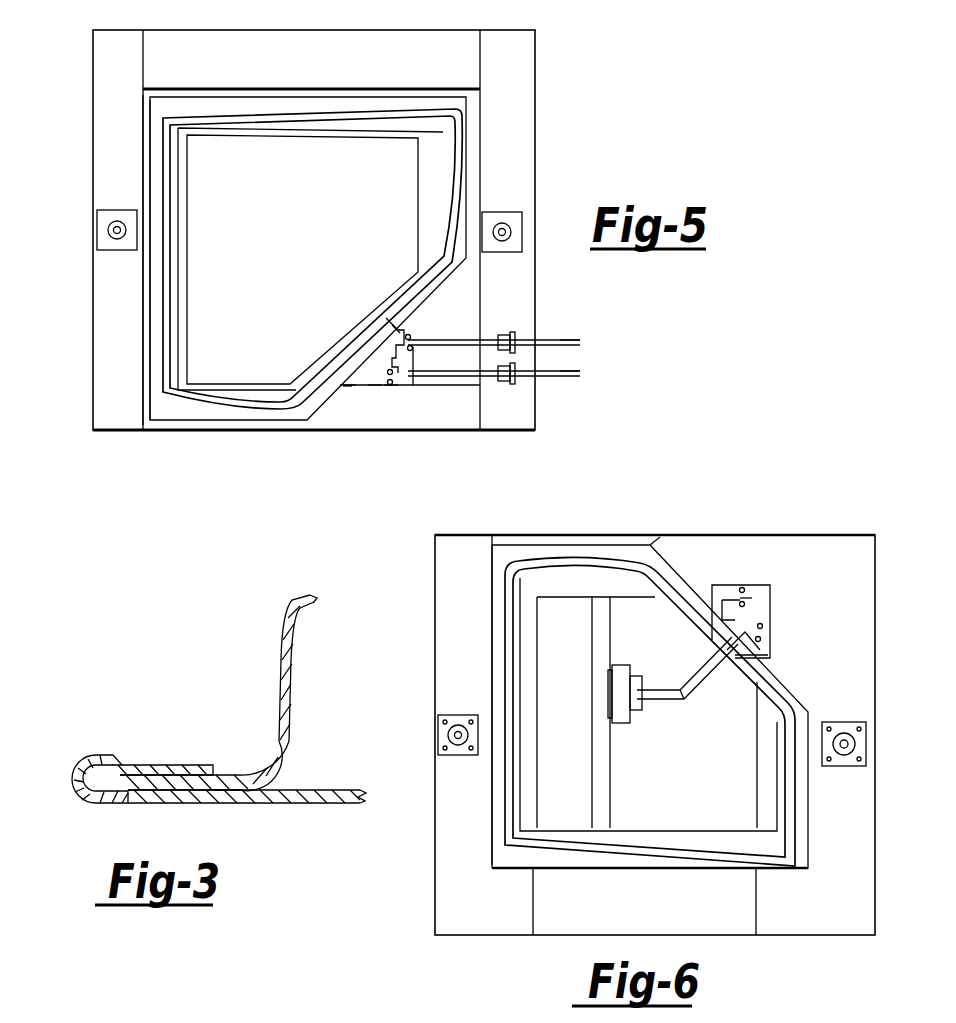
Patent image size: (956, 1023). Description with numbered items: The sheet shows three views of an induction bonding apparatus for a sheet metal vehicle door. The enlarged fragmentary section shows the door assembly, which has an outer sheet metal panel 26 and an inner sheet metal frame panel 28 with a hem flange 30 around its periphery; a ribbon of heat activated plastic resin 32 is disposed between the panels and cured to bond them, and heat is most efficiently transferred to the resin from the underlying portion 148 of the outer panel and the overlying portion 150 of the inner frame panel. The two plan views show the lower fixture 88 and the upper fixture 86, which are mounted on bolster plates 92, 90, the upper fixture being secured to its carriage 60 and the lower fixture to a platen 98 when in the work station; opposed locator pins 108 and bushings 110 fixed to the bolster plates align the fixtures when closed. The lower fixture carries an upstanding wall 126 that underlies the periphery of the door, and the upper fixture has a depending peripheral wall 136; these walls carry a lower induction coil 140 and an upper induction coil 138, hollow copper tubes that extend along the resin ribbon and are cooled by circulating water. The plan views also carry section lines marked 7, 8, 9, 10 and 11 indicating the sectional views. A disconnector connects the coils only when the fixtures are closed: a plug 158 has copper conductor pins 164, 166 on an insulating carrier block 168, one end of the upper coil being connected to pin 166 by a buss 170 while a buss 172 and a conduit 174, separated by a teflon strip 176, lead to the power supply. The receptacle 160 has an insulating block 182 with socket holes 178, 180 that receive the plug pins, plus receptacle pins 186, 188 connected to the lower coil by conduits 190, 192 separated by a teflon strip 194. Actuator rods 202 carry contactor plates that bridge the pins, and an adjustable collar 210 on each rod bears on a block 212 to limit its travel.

In FIG. 3, the outer sheet metal panel 26 is at (305, 808).
In FIG. 3, the inner sheet metal frame panel 28 is at (276, 655).
In FIG. 3, the hem flange 30 is at (158, 763).
In FIG. 3, the heat activated plastic adhesive or resin 32 is at (216, 792).
In FIG. 3, the underlying portion of the outer metal panel 148 is at (158, 804).
In FIG. 3, the overlying portion of the inner frame panel 150 is at (178, 773).
In FIG. 6, the carriage 60 is at (436, 858).
In FIG. 6, the upper fixture 86 is at (489, 814).
In FIG. 5, the lower fixture 88 is at (148, 128).
In FIG. 6, the bolster plate 90 is at (452, 628).
In FIG. 5, the bolster plate 92 is at (143, 310).
In FIG. 5, the platen 98 is at (118, 431).
In FIG. 6, the locator pins 108 is at (450, 737).
In FIG. 5, the bushings 110 is at (107, 229).
In FIG. 5, the upstanding wall 126 is at (148, 287).
In FIG. 6, the depending peripheral wall 136 is at (490, 682).
In FIG. 6, the upper induction coil 138 is at (505, 597).
In FIG. 5, the lower induction coil 140 is at (163, 344).
In FIG. 6, the plug 158 is at (773, 626).
In FIG. 5, the receptacle 160 is at (375, 398).
In FIG. 6, the conductor pin 164 is at (745, 593).
In FIG. 6, the conductor pin 166 is at (775, 639).
In FIG. 6, the carrier block 168 is at (712, 600).
In FIG. 6, the conduit or buss 170 is at (770, 656).
In FIG. 6, the conduit or buss 172 is at (700, 692).
In FIG. 6, the conduit 174 is at (707, 672).
In FIG. 6, the strip of electrically insulating material 176 is at (660, 702).
In FIG. 5, the socket hole 178 is at (391, 394).
In FIG. 5, the socket hole 180 is at (415, 346).
In FIG. 5, the block 182 is at (347, 392).
In FIG. 5, the receptacle conductor pin 186 is at (397, 378).
In FIG. 5, the receptacle conductor pin 188 is at (412, 344).
In FIG. 5, the conduit 190 is at (352, 388).
In FIG. 5, the conduit 192 is at (410, 336).
In FIG. 5, the strip of teflon 194 is at (392, 330).
In FIG. 5, the actuator rod 202 is at (579, 375).
In FIG. 5, the adjustable collar 210 is at (502, 390).
In FIG. 5, the block 212 is at (516, 378).
In FIG. 5, the section line 7- 7 is at (486, 56).
In FIG. 5, the section line 8- 8 is at (202, 350).
In FIG. 5, the section line 9- 9 is at (172, 48).
In FIG. 5, the section line 10- 10 is at (428, 140).
In FIG. 5, the section line 11- 11 is at (143, 177).